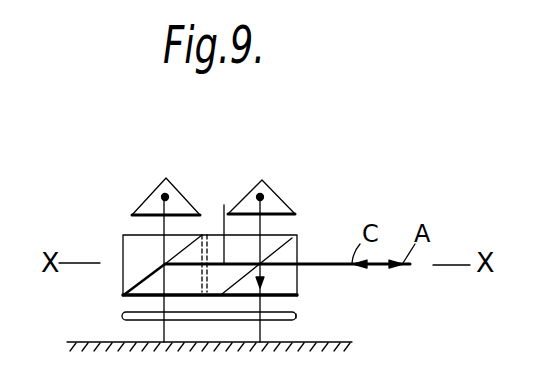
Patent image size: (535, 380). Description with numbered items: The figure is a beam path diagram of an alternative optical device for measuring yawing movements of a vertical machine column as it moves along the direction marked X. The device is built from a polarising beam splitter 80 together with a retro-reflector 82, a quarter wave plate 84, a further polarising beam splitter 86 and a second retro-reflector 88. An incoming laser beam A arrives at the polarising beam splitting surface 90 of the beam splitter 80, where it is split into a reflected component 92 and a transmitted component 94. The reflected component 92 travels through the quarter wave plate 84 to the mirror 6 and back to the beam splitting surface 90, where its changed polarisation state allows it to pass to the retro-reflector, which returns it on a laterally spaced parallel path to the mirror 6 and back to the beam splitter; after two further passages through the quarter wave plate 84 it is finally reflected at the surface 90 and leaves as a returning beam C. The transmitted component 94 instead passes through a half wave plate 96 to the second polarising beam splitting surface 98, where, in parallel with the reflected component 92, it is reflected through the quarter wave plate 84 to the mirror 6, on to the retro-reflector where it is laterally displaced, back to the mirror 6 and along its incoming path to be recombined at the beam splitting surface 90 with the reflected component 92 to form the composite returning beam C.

The mirror 6 is at (91, 342).
The polarising beam splitter 80 is at (300, 248).
The retro-reflector 82 is at (266, 183).
The quarter wave plate 84 is at (300, 318).
The polarising beam splitter 86 is at (122, 234).
The retro-reflector 88 is at (150, 192).
The polarising beam splitting surface 90 is at (300, 247).
The reflected component 92 is at (296, 309).
The transmitted component 94 is at (224, 205).
The half wave plate 96 is at (204, 232).
The second polarising beam splitting surface 98 is at (128, 282).